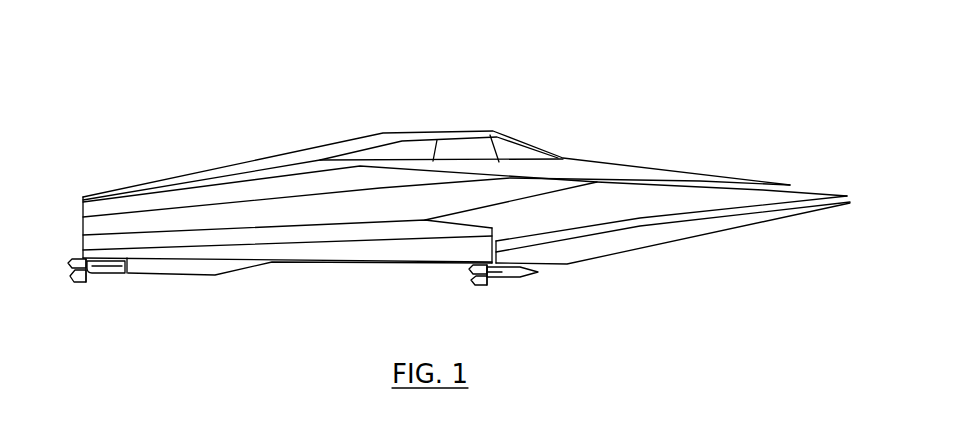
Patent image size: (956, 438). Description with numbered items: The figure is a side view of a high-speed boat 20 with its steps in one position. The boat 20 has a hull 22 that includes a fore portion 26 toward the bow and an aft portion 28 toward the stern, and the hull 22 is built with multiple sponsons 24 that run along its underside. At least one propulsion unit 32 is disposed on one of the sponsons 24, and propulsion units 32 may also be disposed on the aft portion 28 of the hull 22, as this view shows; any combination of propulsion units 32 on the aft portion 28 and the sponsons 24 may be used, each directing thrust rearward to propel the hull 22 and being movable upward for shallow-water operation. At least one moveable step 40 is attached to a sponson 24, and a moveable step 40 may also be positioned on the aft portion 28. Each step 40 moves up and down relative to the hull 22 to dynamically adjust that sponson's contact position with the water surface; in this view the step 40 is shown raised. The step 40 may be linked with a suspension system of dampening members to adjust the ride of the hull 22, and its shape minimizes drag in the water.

The high-speed boat 20 is at (553, 98).
The hull 22 is at (373, 267).
The sponsons 24 is at (647, 247).
The fore portion 26 is at (735, 232).
The aft portion 28 is at (282, 265).
The propulsion unit 32 is at (97, 277).
The moveable step 40 is at (177, 277).